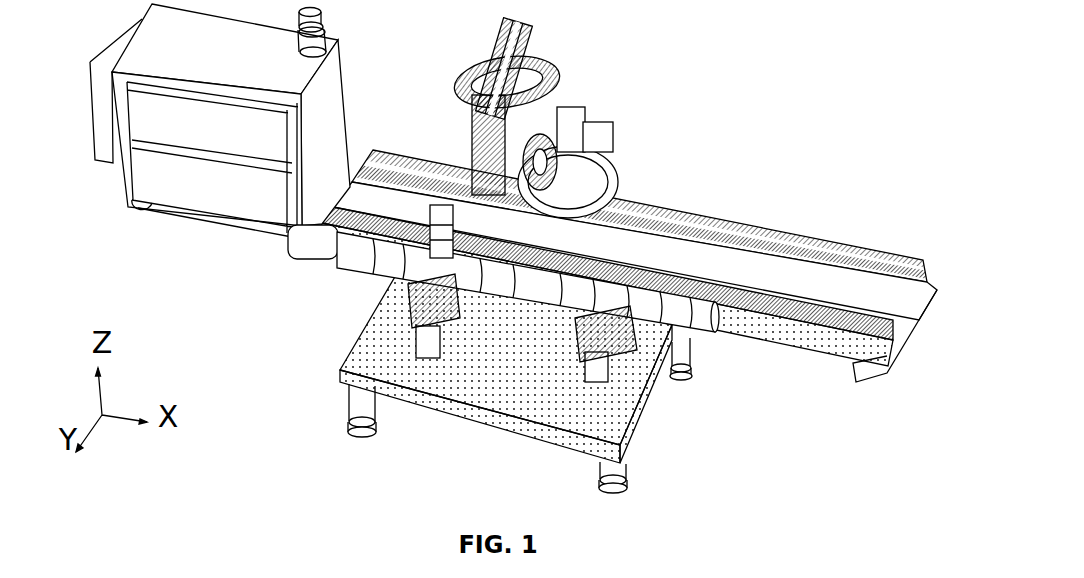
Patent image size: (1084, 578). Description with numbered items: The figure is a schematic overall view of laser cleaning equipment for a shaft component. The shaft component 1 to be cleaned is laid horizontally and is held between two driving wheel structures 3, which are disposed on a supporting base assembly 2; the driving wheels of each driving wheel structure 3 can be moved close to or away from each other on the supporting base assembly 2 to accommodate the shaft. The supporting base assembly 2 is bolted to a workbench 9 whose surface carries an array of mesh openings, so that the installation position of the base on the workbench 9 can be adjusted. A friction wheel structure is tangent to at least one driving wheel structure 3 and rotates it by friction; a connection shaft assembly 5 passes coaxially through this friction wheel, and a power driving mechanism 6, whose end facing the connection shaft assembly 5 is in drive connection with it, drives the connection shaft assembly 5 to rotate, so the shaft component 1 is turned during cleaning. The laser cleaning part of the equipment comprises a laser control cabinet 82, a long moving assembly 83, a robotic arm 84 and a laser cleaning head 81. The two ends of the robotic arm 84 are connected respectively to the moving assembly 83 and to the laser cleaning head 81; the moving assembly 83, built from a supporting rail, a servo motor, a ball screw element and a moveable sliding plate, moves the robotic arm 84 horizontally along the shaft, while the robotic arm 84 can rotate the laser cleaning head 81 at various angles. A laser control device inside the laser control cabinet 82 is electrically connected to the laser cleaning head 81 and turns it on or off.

The shaft component 1 is at (363, 248).
The supporting base assembly 2 is at (352, 430).
The driving wheel structures 3 is at (410, 297).
The connection shaft assembly 5 is at (478, 420).
The power driving mechanism 6 is at (667, 368).
The workbench 9 is at (340, 373).
The laser cleaning head 81 is at (437, 222).
The laser control cabinet 82 is at (197, 195).
The moving assembly 83 is at (722, 232).
The robotic arm 84 is at (563, 90).